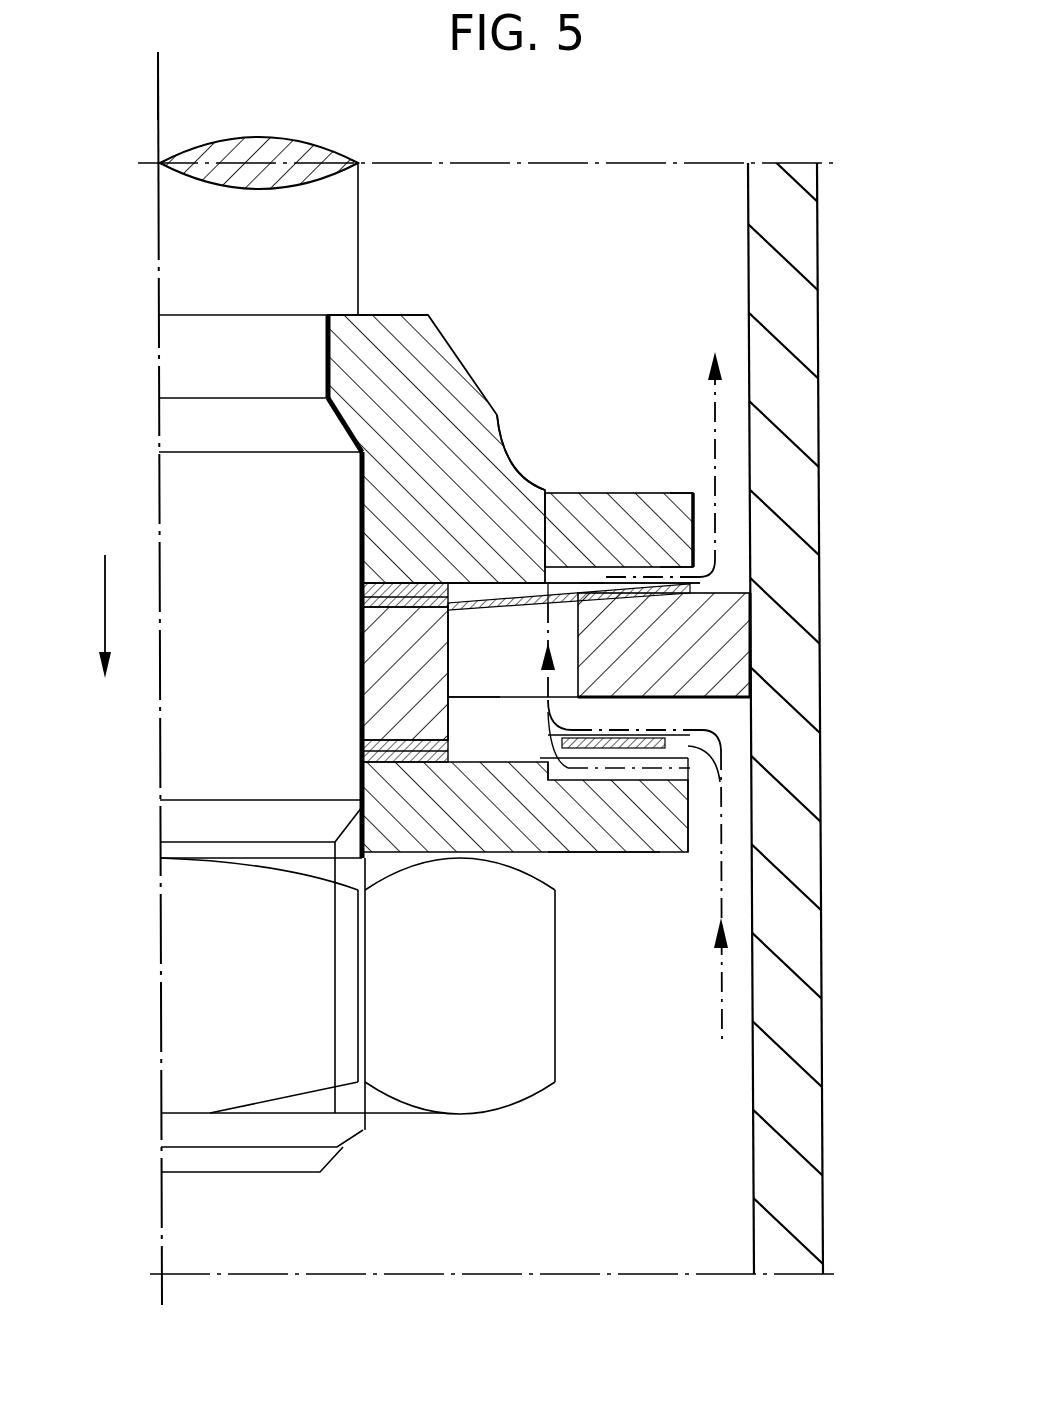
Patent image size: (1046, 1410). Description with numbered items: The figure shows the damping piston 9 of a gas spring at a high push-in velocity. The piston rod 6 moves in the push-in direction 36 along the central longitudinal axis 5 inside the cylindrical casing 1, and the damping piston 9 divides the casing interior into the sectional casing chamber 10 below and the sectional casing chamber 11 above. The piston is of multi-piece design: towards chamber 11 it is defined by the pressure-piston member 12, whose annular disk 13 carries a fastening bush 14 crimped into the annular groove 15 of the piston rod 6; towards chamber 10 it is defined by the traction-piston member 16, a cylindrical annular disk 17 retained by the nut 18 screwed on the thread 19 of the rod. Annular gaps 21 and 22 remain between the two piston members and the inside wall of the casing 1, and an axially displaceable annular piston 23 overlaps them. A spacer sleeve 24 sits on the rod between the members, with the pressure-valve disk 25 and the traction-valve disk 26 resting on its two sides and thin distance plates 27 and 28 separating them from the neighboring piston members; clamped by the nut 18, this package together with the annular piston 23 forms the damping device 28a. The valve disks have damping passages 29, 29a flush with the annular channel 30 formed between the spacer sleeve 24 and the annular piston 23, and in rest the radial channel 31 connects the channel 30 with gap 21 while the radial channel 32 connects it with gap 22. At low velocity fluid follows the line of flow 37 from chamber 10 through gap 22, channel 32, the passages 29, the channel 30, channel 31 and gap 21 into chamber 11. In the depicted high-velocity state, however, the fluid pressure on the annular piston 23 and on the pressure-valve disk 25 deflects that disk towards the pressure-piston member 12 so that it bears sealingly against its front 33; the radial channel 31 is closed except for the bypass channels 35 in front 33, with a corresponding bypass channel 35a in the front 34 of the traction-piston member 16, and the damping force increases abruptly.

The casing 1 is at (826, 251).
The central longitudinal axis 5 is at (158, 95).
The piston rod 6 is at (242, 240).
The damping piston 9 is at (432, 290).
The sectional casing chamber 10 is at (645, 1240).
The sectional casing chamber 11 is at (660, 233).
The pressure-piston member 12 is at (503, 402).
The annular disk 13 is at (682, 520).
The fastening bush 14 is at (420, 385).
The annular groove 15 is at (245, 352).
The traction-piston member 16 is at (572, 870).
The cylindrical annular disk 17 is at (672, 815).
The nut 18 is at (457, 1058).
The thread 19 is at (348, 1125).
The annular gap 21 is at (729, 520).
The annular gap 22 is at (733, 815).
The annular piston 23 is at (675, 655).
The spacer sleeve 24 is at (405, 672).
The pressure-valve disk 25 is at (592, 580).
The traction-valve disk 26 is at (673, 741).
The distance plate 27 is at (362, 587).
The distance plate 28 is at (372, 750).
The damping device 28a is at (695, 568).
The damping passage 29 is at (574, 619).
The damping passage 29a is at (493, 745).
The annular channel 30 is at (538, 661).
The radial channel 31 is at (680, 560).
The radial channel 32 is at (627, 752).
The front 33 is at (660, 590).
The front 34 is at (640, 752).
The bypass channel 35 is at (550, 573).
The bypass channel 35a is at (556, 775).
The push-in direction 36 is at (103, 593).
The line of flow 37 is at (722, 960).